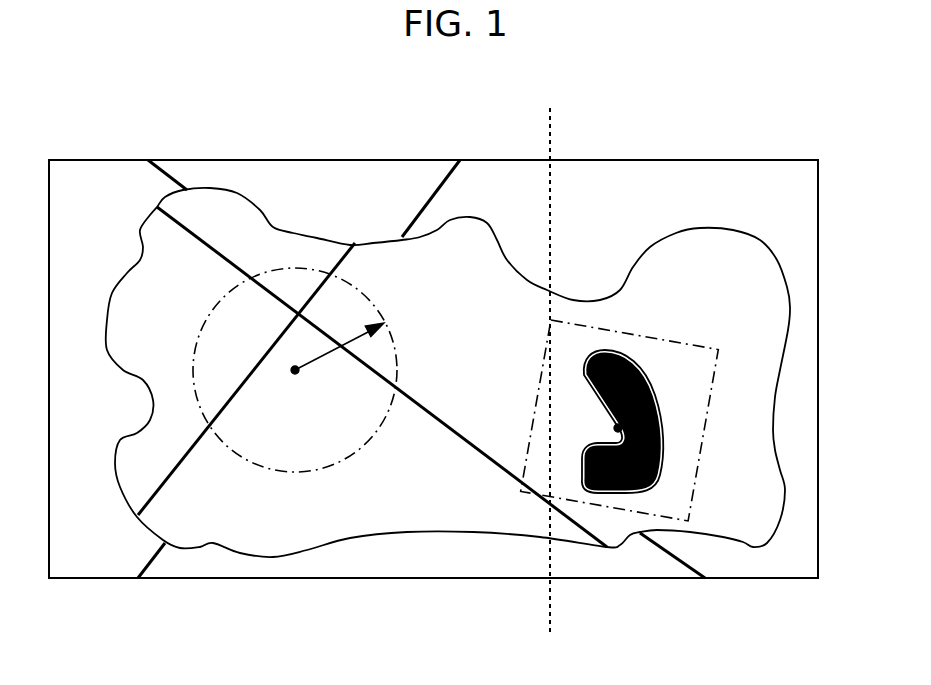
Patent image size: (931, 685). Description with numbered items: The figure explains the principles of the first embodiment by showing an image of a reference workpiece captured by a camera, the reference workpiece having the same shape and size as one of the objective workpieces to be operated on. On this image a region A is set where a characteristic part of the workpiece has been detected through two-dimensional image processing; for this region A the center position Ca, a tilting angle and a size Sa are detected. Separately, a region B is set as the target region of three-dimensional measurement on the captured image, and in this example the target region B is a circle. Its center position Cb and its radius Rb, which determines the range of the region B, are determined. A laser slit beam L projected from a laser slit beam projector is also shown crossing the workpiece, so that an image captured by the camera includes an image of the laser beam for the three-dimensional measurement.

The laser slit beam L is at (193, 235).
The region B is at (288, 370).
The center position Cb is at (304, 390).
The radius Rb is at (339, 335).
The region A is at (703, 346).
The size Sa is at (633, 421).
The center position Ca is at (615, 428).